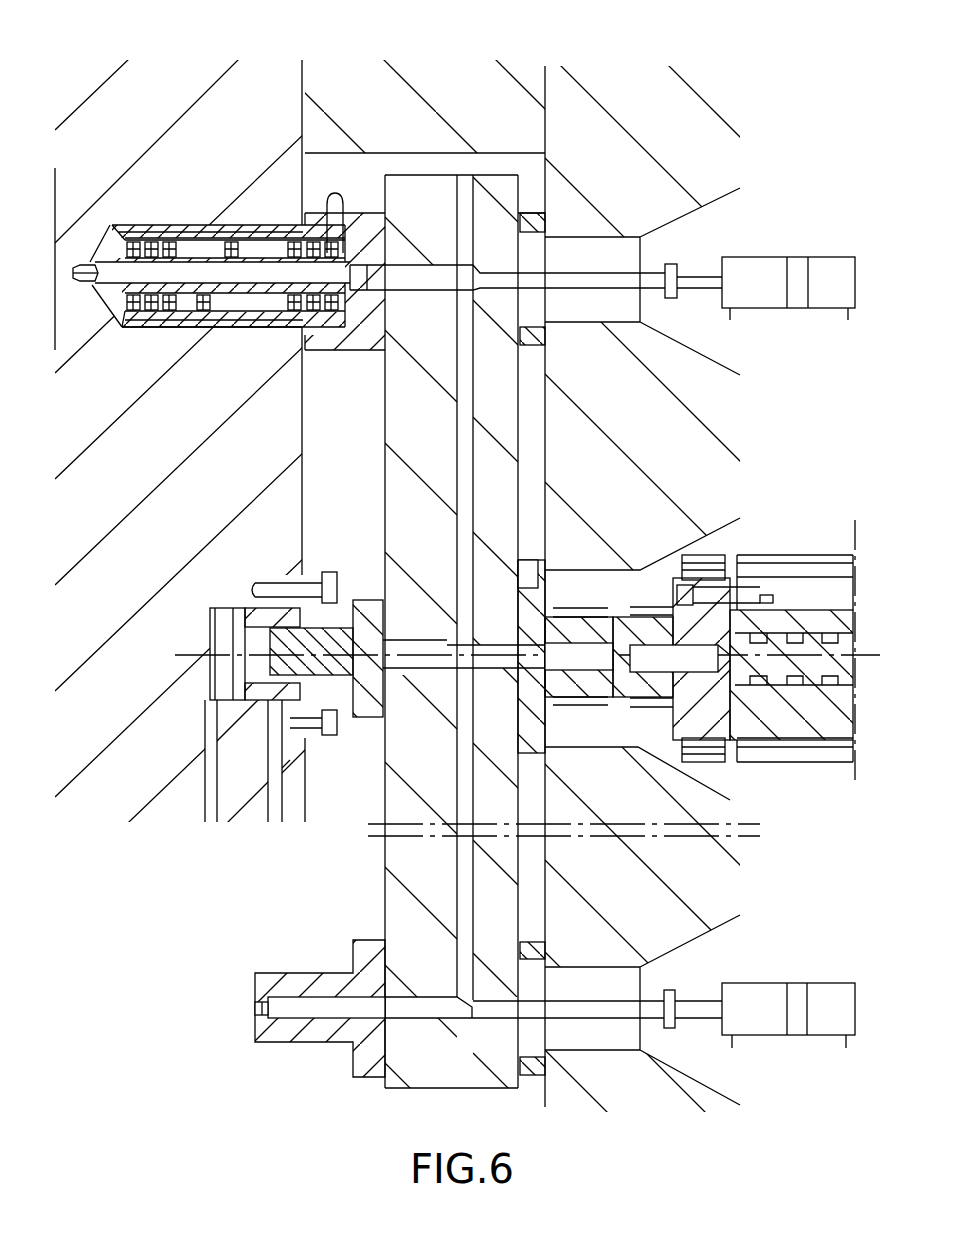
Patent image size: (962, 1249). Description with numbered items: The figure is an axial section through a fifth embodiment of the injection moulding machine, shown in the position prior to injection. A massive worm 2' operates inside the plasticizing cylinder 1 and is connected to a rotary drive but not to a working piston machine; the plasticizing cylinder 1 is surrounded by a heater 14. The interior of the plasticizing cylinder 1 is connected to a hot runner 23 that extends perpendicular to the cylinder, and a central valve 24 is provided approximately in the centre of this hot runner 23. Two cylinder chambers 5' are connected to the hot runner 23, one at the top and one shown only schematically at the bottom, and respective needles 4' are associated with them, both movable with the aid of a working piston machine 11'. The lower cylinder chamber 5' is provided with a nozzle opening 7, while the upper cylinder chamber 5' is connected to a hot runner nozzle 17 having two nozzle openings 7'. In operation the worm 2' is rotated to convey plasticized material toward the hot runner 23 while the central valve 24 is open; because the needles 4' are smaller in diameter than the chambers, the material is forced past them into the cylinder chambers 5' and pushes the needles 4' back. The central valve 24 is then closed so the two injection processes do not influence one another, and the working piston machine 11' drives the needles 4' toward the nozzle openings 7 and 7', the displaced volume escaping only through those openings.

The hot runner nozzle 17 is at (198, 247).
The nozzle openings 7' is at (62, 272).
The cylinder chambers 5' is at (465, 574).
The hot runner 23 is at (458, 863).
The needles 4' is at (575, 598).
The working piston machine 11' is at (788, 687).
The nozzle opening 7 is at (287, 1008).
The central valve 24 is at (356, 746).
The heater 14 is at (802, 555).
The plasticizing cylinder 1 is at (848, 606).
The massive worm 2' is at (810, 682).